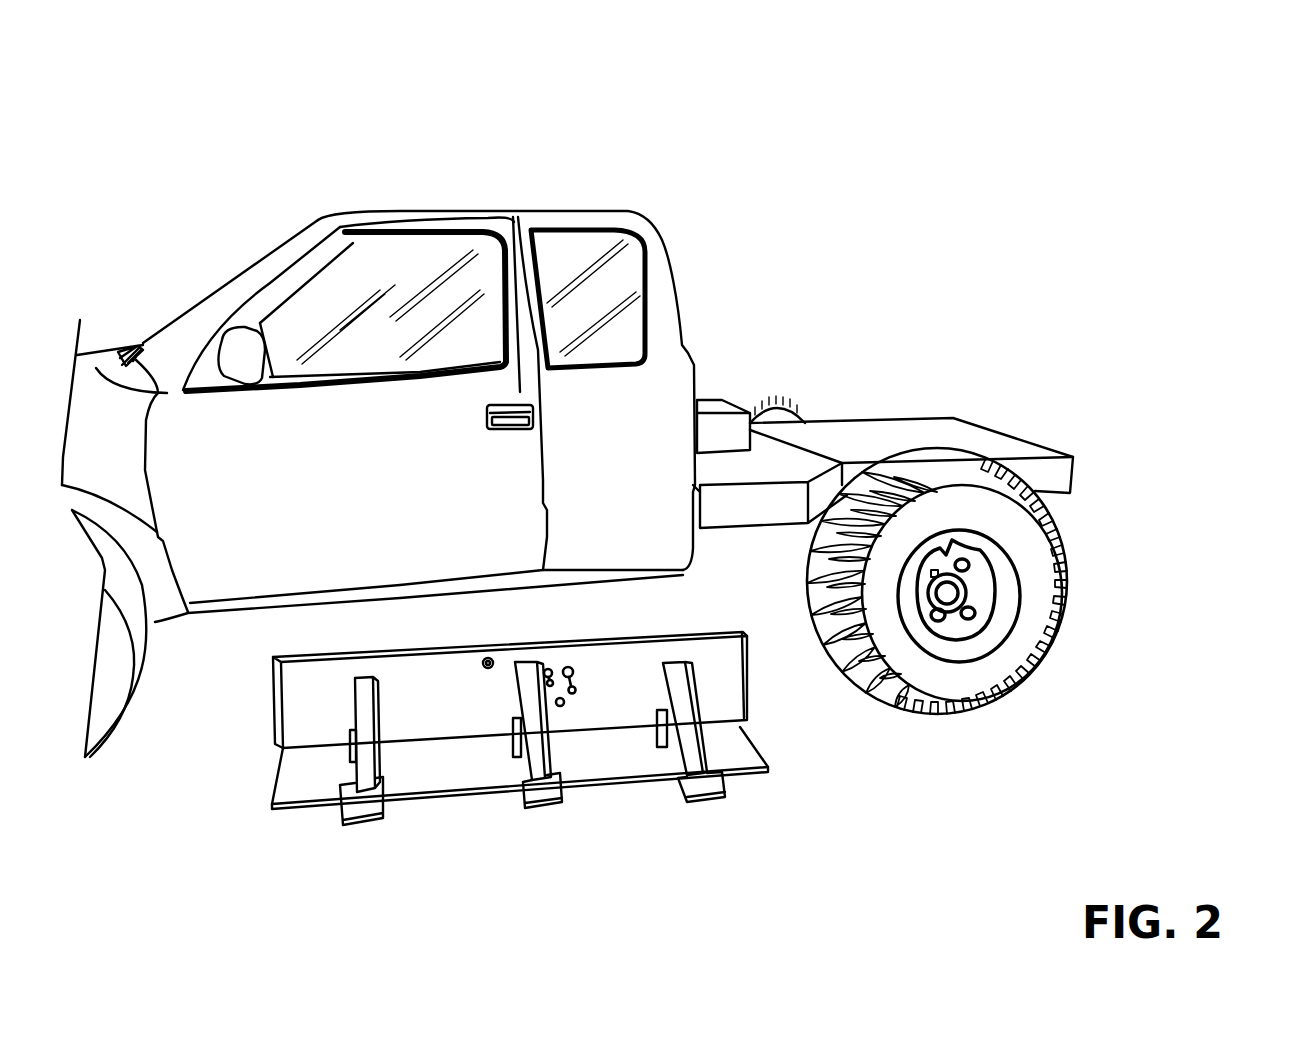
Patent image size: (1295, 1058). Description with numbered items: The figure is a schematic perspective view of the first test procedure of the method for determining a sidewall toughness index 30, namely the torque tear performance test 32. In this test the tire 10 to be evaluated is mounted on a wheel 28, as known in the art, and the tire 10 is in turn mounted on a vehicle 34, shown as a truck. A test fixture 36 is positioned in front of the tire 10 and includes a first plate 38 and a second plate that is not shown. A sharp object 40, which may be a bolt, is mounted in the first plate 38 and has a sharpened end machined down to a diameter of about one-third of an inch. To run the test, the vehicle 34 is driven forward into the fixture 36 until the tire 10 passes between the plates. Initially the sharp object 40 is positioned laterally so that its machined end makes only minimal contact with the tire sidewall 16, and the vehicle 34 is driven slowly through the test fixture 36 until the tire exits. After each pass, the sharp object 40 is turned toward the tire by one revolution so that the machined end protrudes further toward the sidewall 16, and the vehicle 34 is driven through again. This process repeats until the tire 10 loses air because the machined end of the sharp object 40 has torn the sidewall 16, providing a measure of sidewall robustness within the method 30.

The tire 10 is at (1070, 580).
The sidewall 16 is at (1038, 560).
The wheel 28 is at (1000, 614).
The method for determining a sidewall toughness index 30 is at (1157, 122).
The torque tear performance test 32 is at (267, 783).
The vehicle 34 is at (427, 210).
The test fixture 36 is at (737, 778).
The first plate 38 is at (748, 672).
The sharp object 40 is at (563, 705).